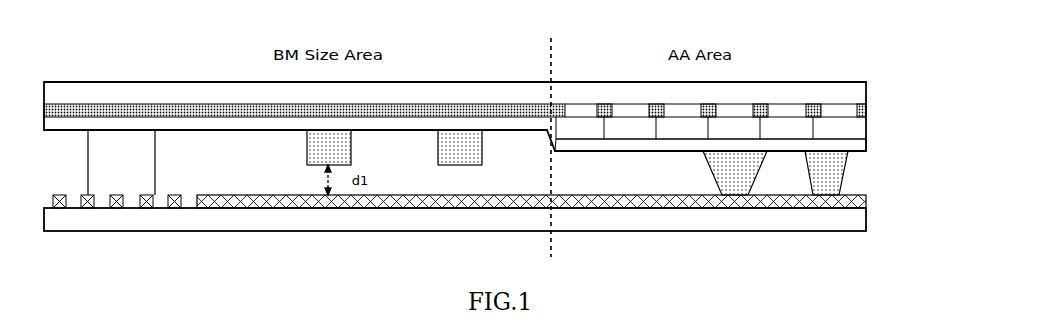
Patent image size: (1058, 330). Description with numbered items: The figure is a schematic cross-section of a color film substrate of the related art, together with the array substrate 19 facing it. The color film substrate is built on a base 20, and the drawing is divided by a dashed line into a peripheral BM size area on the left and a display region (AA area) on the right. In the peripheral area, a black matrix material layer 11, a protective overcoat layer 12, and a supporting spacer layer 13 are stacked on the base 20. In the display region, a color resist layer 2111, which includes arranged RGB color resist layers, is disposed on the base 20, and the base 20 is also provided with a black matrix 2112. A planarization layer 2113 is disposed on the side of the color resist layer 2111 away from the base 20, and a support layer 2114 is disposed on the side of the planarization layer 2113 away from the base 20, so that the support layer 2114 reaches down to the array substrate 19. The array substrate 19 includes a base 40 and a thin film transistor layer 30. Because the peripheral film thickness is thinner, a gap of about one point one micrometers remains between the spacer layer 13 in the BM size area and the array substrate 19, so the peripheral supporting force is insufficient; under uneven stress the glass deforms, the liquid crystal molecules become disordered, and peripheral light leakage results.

The black matrix material layer 11 is at (162, 113).
The protective overcoat layer 12 is at (75, 125).
The supporting spacer layer 13 is at (357, 138).
The base 20 is at (487, 91).
The color resist layer 2111 is at (587, 120).
The black matrix 2112 is at (762, 113).
The planarization layer 2113 is at (633, 143).
The support layer 2114 is at (720, 158).
The thin film transistor layer 30 is at (471, 203).
The base 40 is at (897, 198).
The array substrate 19 is at (486, 213).